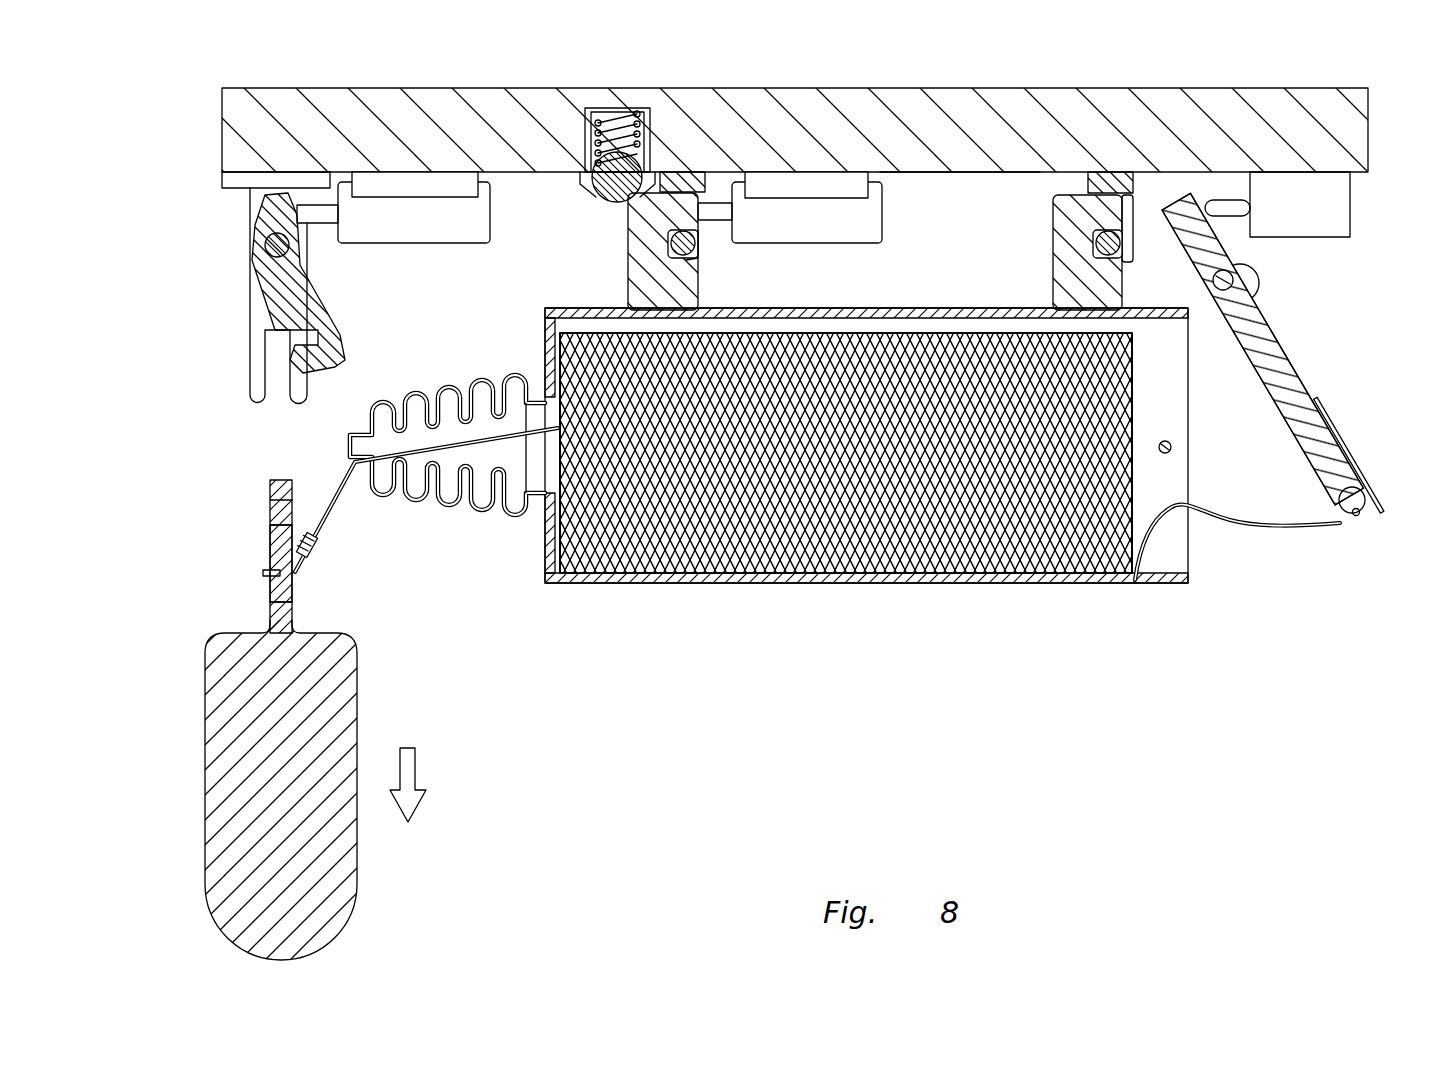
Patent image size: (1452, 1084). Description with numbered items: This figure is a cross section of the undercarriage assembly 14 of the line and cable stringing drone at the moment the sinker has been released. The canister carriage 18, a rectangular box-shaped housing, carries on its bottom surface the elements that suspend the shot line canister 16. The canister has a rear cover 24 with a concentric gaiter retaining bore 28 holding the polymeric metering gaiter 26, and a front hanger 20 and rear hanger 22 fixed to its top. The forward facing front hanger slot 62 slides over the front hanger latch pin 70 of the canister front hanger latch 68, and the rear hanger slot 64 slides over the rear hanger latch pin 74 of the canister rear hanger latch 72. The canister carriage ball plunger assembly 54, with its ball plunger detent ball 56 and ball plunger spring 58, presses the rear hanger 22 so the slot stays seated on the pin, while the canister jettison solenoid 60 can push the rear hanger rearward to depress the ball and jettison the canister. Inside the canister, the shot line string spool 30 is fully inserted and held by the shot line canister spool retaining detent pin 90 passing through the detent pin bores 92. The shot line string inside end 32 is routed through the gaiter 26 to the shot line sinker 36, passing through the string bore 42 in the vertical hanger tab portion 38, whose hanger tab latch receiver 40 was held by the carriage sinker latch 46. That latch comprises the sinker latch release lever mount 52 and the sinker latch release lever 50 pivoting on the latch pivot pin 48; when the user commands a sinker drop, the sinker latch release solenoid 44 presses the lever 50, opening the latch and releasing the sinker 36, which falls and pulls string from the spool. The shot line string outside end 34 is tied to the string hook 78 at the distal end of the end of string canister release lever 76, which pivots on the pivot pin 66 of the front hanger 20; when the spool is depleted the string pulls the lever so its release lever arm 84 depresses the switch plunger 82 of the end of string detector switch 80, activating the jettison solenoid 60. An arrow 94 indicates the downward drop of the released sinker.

The undercarriage assembly 14 is at (1370, 113).
The shot line canister 16 is at (665, 590).
The canister carriage 18 is at (905, 175).
The front hanger 20 is at (1053, 293).
The rear hanger 22 is at (628, 300).
The rear cover 24 is at (545, 335).
The polymeric metering gaiter 26 is at (412, 505).
The gaiter retaining bore 28 is at (552, 432).
The shot line string spool 30 is at (1128, 400).
The shot line string inside end 32 is at (335, 480).
The shot line string outside end 34 is at (1290, 540).
The shot line sinker 36 is at (205, 762).
The vertical hanger tab portion 38 is at (270, 548).
The hanger tab latch receiver 40 is at (275, 515).
The string bore 42 is at (290, 590).
The sinker latch release solenoid 44 is at (410, 245).
The carriage sinker latch 46 is at (228, 192).
The latch pivot pin 48 is at (266, 245).
The sinker latch release lever 50 is at (272, 298).
The sinker latch release lever mount 52 is at (255, 348).
The canister carriage ball plunger assembly 54 is at (592, 182).
The ball plunger detent ball 56 is at (612, 196).
The ball plunger spring 58 is at (612, 140).
The canister jettison solenoid 60 is at (830, 243).
The front hanger slot 62 is at (1097, 247).
The rear hanger slot 64 is at (665, 243).
The pivot pin 66 is at (1232, 285).
The canister front hanger latch 68 is at (1133, 258).
The front hanger latch pin 70 is at (1100, 240).
The canister rear hanger latch 72 is at (700, 256).
The rear hanger latch pin 74 is at (672, 241).
The end of string canister release lever 76 is at (1320, 405).
The string hook 78 is at (1360, 506).
The end of string detector switch 80 is at (1350, 203).
The switch plunger 82 is at (1225, 205).
The release lever arm 84 is at (1195, 235).
The shot line canister spool retaining detent pin 90 is at (1171, 449).
The detent pin bores 92 is at (1168, 445).
The direction arrow 94 is at (418, 765).